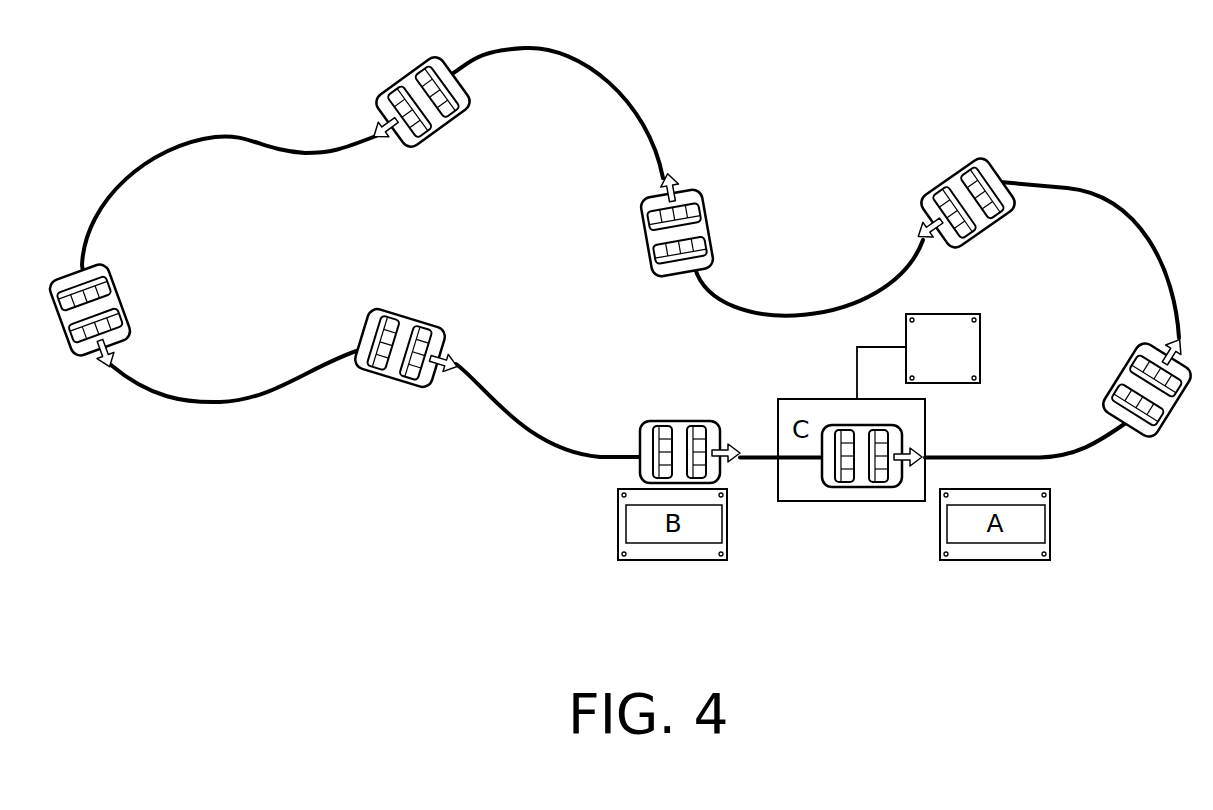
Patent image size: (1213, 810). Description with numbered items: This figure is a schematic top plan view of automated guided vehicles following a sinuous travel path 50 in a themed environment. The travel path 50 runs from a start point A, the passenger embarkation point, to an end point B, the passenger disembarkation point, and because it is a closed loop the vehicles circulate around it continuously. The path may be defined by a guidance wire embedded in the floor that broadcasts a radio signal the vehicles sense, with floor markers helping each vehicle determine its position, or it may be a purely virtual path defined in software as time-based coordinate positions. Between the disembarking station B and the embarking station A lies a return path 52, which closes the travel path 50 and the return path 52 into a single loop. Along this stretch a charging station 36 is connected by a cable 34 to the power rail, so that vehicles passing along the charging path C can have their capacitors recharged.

The travel path 50 is at (645, 110).
The return path 52 is at (752, 459).
The cable 34 is at (857, 375).
The charging station 36 is at (980, 348).